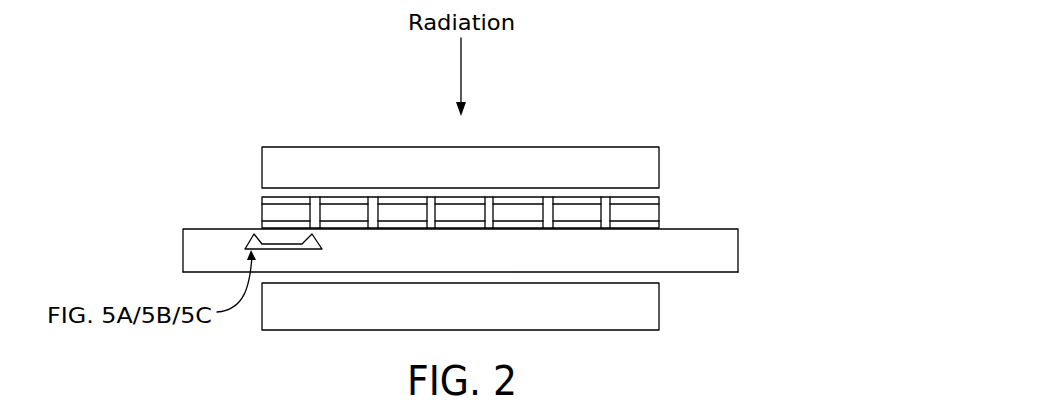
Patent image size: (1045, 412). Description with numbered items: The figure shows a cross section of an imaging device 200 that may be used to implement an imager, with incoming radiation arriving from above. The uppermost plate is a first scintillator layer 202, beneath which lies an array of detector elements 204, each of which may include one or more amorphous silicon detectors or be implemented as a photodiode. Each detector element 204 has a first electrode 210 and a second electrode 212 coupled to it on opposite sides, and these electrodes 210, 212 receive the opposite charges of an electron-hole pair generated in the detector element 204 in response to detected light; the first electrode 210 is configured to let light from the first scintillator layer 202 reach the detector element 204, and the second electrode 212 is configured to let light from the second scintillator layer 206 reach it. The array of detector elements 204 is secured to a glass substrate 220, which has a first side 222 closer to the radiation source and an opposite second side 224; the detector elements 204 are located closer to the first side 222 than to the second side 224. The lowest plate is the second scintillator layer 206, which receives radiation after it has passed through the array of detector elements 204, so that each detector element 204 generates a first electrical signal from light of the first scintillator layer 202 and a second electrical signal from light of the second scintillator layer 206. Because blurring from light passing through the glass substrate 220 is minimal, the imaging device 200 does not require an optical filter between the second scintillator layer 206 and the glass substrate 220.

The imaging device 200 is at (700, 45).
The first scintillator layer 202 is at (620, 147).
The detector elements 204 is at (260, 208).
The second scintillator layer 206 is at (659, 313).
The first electrode 210 is at (290, 202).
The second electrode 212 is at (260, 226).
The glass substrate 220 is at (738, 258).
The first side 222 is at (190, 228).
The second side 224 is at (718, 272).